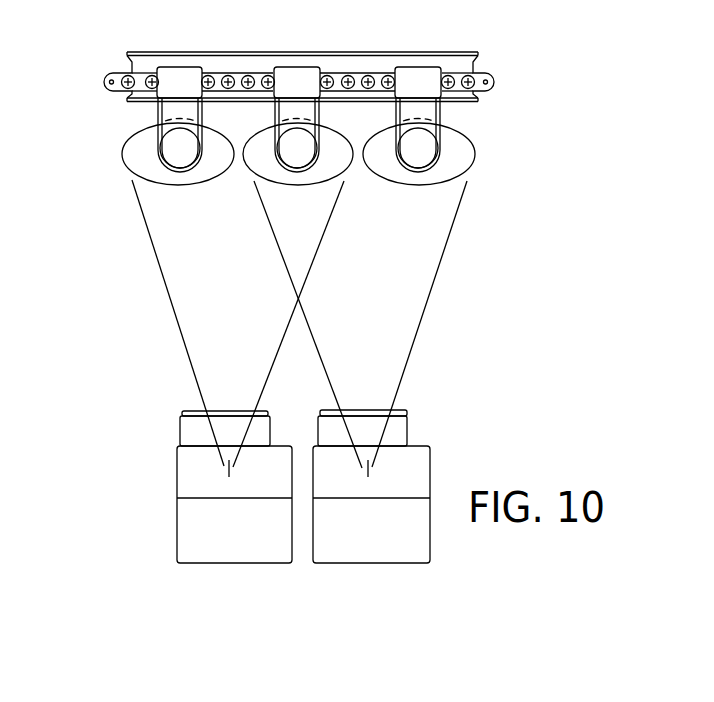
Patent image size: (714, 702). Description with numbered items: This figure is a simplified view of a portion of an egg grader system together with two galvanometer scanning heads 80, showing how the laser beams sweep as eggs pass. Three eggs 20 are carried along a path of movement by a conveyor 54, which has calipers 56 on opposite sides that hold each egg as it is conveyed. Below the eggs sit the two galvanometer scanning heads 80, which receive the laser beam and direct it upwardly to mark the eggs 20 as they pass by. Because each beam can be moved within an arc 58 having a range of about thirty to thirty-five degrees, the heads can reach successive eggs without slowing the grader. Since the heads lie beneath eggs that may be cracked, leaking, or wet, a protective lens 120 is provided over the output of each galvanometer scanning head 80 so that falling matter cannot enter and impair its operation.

The conveyor 54 is at (494, 60).
The calipers 56 is at (292, 112).
The eggs 20 is at (477, 150).
The arc 58 is at (283, 317).
The galvanometer scanning head 80 is at (345, 563).
The protective lens 120 is at (190, 411).